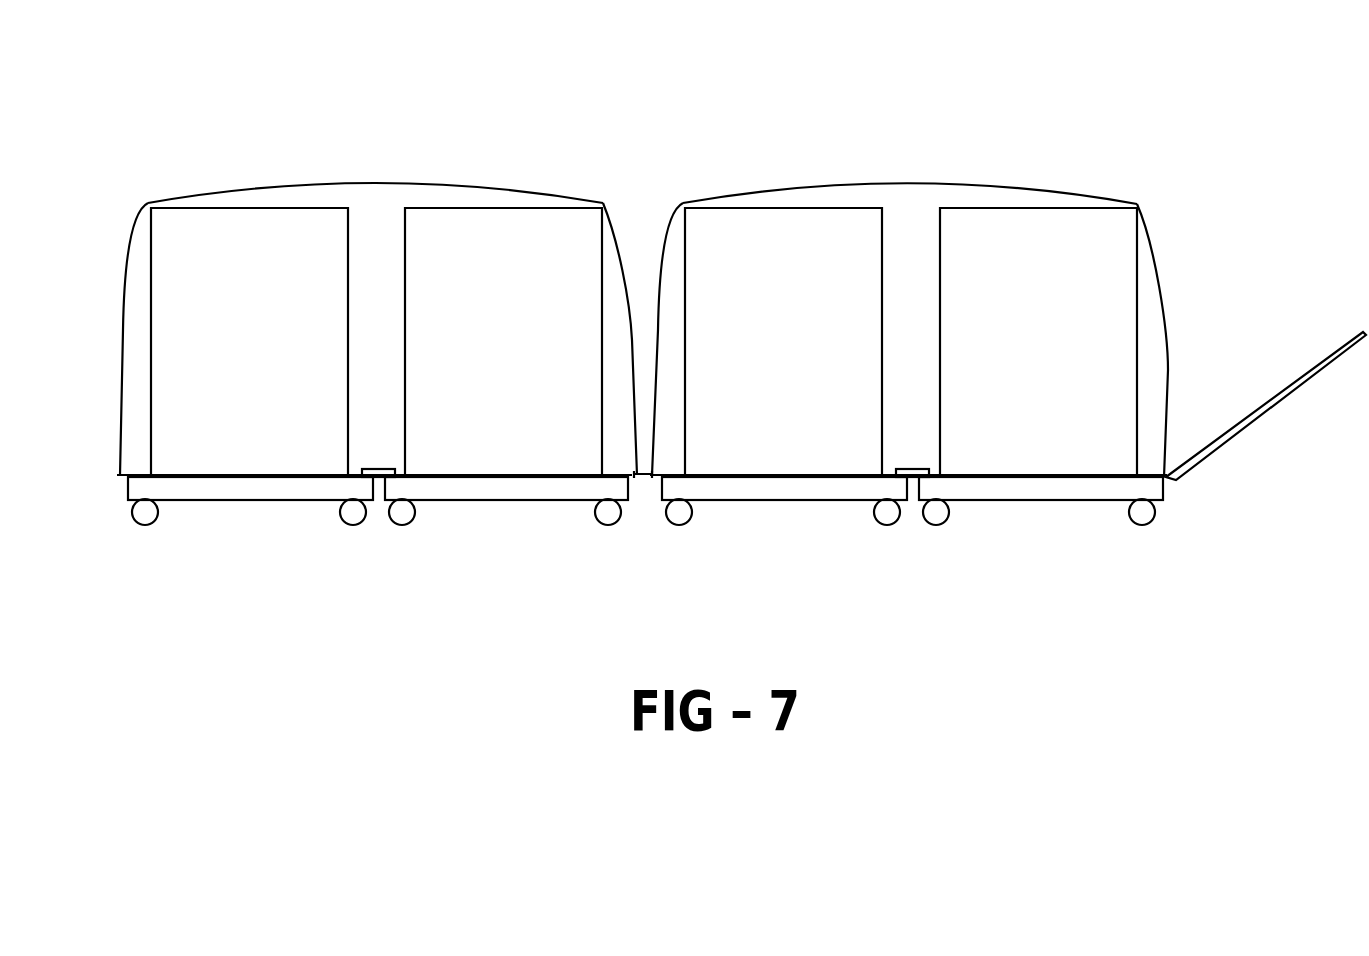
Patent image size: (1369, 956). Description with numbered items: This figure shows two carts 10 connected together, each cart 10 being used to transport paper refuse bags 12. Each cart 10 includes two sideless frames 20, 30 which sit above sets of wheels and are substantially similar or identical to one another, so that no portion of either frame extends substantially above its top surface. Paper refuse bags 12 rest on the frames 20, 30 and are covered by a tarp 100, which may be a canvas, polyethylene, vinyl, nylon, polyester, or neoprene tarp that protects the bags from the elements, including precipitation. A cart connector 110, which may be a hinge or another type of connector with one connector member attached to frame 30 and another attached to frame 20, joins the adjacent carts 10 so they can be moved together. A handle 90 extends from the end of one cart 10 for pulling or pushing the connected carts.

The cart 10 is at (477, 122).
The tarp 100 is at (550, 192).
The paper refuse bag 12 is at (376, 341).
The frame 30 is at (236, 522).
The frame 20 is at (492, 522).
The cart connector 110 is at (643, 500).
The handle 90 is at (1279, 390).